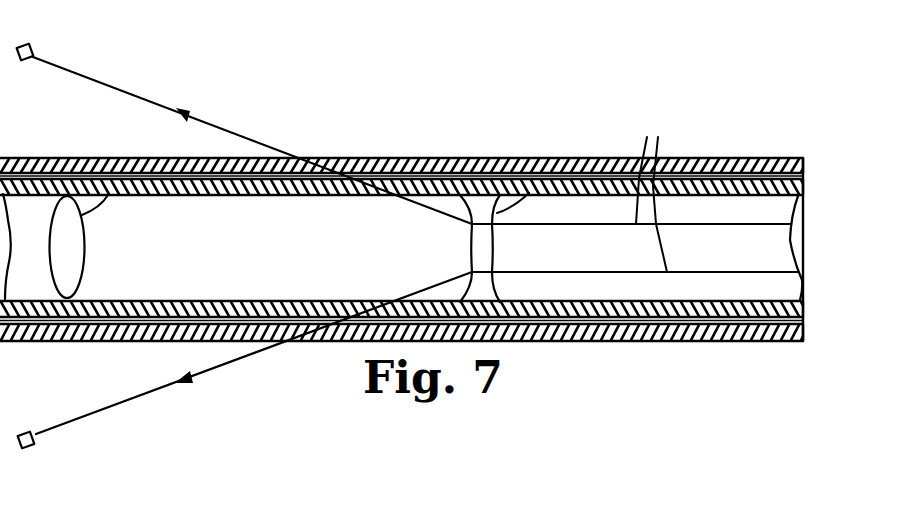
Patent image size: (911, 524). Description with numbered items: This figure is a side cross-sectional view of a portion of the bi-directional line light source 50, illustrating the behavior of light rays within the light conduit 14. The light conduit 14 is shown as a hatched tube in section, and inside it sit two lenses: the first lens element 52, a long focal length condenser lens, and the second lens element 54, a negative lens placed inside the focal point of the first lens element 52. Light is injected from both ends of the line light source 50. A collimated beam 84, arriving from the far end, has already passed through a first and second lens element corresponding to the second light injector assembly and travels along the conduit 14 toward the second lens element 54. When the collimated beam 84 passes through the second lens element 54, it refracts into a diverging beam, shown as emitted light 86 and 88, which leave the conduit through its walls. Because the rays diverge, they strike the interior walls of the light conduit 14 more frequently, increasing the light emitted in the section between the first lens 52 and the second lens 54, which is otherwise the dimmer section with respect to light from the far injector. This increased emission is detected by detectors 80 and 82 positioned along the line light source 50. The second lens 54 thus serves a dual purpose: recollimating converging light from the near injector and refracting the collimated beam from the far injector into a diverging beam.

The light conduit 14 is at (596, 316).
The bi-directional line light source 50 is at (390, 150).
The first lens element 52 is at (108, 195).
The second lens element 54 is at (529, 194).
The detector 80 is at (31, 449).
The detector 82 is at (27, 48).
The collimated beam 84 is at (653, 193).
The emitted light 86 is at (227, 128).
The emitted light 88 is at (212, 370).